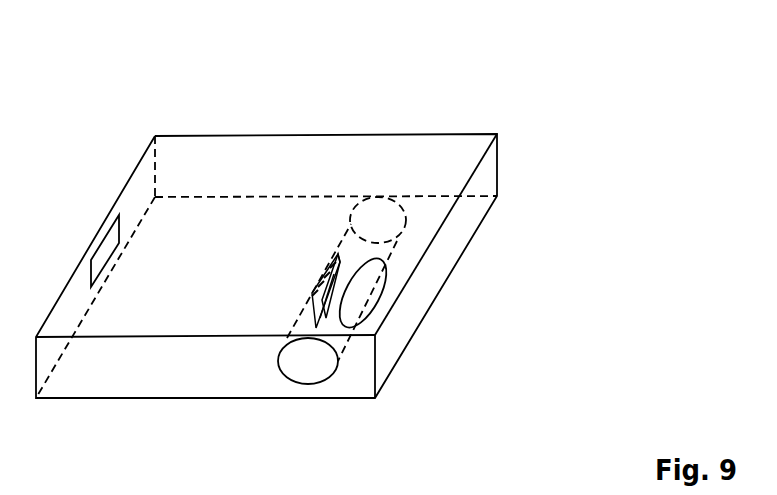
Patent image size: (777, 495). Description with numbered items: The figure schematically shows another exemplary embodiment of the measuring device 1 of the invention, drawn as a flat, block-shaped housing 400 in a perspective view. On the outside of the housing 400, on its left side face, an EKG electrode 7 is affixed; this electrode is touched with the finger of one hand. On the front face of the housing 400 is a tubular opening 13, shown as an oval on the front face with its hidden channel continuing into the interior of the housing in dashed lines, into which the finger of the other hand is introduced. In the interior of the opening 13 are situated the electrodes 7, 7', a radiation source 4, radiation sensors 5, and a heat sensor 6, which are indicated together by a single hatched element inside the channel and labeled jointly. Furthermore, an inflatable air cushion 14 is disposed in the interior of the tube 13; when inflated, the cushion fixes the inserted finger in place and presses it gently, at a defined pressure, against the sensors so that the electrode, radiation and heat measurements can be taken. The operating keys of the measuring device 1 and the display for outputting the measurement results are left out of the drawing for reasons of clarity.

The measuring device 1 is at (606, 157).
The housing 400 is at (278, 159).
The EKG electrode 7 is at (79, 204).
The electrode 7' is at (189, 172).
The radiation source 4 is at (189, 172).
The radiation sensors 5 is at (189, 172).
The heat sensor 6 is at (189, 172).
The tubular opening 13 is at (300, 365).
The inflatable air cushion 14 is at (365, 292).